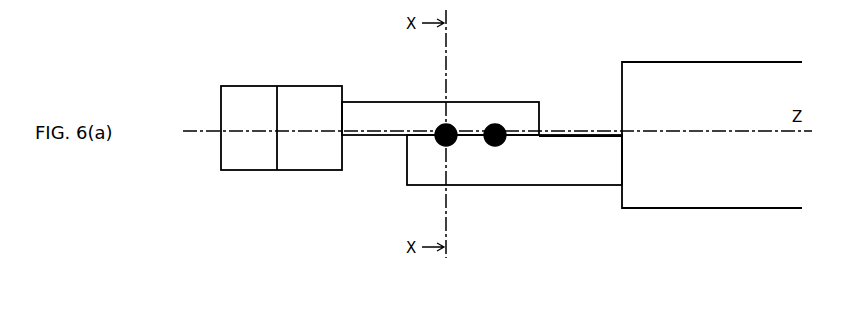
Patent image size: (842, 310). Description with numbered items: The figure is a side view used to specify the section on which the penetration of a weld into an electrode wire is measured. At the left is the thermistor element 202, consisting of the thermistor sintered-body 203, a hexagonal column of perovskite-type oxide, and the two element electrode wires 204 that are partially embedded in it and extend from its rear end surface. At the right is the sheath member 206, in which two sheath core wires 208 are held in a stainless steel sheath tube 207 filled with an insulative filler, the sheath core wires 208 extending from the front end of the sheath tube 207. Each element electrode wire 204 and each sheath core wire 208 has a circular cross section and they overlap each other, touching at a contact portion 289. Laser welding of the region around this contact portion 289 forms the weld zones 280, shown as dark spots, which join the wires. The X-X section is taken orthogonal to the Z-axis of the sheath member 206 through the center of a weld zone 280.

The thermistor element 202 is at (378, 212).
The thermistor sintered-body 203 is at (315, 142).
The element electrode wire 204 is at (382, 130).
The sheath member 206 is at (698, 255).
The sheath tube 207 is at (680, 168).
The sheath core wire 208 is at (588, 173).
The weld zone 280 is at (449, 124).
The contact portion 289 is at (525, 136).